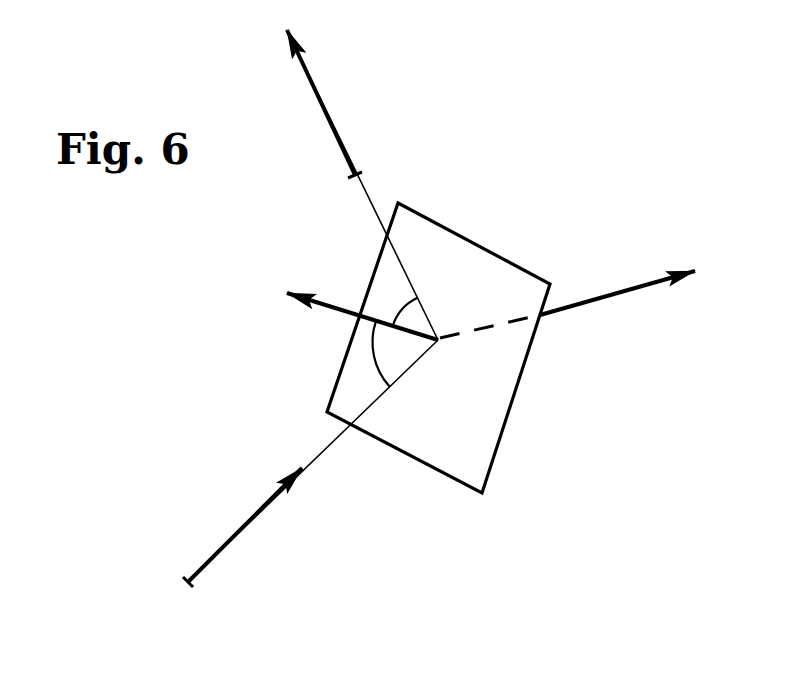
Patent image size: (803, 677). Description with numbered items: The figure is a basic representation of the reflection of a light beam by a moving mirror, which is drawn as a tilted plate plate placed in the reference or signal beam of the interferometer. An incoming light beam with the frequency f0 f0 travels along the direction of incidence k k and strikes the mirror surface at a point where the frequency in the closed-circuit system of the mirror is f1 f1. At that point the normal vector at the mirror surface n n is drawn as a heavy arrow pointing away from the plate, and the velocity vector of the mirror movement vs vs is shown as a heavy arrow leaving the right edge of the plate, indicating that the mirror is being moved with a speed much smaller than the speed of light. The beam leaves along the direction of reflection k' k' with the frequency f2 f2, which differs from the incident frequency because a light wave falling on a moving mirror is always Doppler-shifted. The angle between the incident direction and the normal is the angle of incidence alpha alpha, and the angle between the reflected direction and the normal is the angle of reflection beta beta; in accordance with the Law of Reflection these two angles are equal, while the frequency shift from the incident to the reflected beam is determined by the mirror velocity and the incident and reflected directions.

The moving mirror plate is at (438, 348).
The direction of incidence k is at (242, 527).
The direction of reflection k' is at (324, 104).
The normal vector at the mirror surface n is at (362, 299).
The velocity vector of the mirror movement vs is at (627, 266).
The frequency of the incident light beam f0 is at (259, 538).
The frequency in the closed-circuit system of the mirror f1 is at (438, 340).
The frequency of the reflected light beam f2 is at (289, 88).
The angle of incidence alpha is at (380, 354).
The angle of reflection beta is at (401, 306).